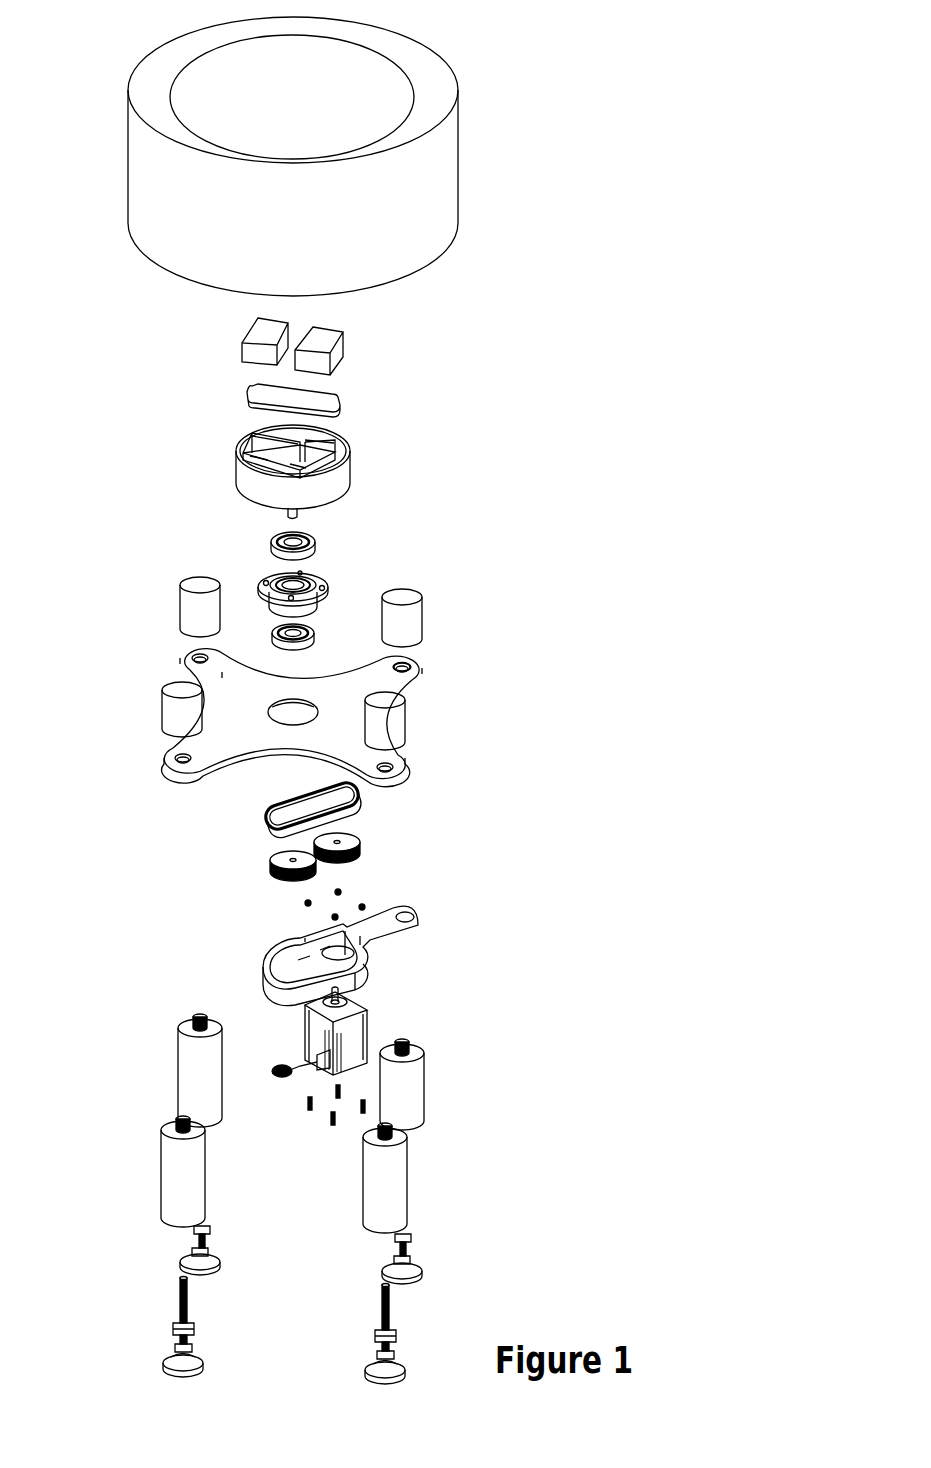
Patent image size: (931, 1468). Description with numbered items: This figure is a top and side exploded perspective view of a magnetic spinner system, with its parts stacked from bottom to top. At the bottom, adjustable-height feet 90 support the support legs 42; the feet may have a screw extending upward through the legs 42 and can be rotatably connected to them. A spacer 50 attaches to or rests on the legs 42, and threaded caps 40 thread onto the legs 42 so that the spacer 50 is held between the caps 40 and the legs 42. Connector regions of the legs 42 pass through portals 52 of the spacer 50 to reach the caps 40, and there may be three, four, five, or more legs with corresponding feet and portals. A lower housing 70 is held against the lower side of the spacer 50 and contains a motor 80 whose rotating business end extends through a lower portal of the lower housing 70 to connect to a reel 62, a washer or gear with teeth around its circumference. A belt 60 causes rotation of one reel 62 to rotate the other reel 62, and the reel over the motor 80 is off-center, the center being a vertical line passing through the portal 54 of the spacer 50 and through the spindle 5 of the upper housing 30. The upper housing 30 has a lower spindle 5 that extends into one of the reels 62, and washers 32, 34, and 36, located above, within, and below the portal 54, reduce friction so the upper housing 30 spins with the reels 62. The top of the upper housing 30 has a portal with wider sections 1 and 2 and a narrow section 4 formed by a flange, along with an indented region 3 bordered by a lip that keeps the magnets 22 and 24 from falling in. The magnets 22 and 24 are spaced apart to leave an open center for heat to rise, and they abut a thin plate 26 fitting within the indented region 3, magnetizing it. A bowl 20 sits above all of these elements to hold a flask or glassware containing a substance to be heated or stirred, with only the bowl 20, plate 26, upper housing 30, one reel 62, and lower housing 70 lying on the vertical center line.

The wider section 1 is at (270, 445).
The wider section 2 is at (322, 452).
The indented region 3 is at (260, 457).
The narrow section 4 is at (297, 467).
The spindle 5 is at (290, 513).
The bowl 20 is at (418, 175).
The magnet 22 is at (280, 330).
The magnet 24 is at (330, 348).
The plate 26 is at (318, 407).
The upper housing 30 is at (361, 479).
The washer 32 is at (317, 540).
The washer 34 is at (323, 580).
The washer 36 is at (313, 633).
The threaded caps 40 is at (177, 698).
The support legs 42 is at (183, 1167).
The spacer 50 is at (283, 718).
The portals 52 is at (413, 672).
The portal 54 is at (298, 712).
The belt 60 is at (293, 813).
The reel 62 is at (273, 870).
The lower housing 70 is at (295, 967).
The motor 80 is at (353, 1030).
The feet 90 is at (393, 1340).